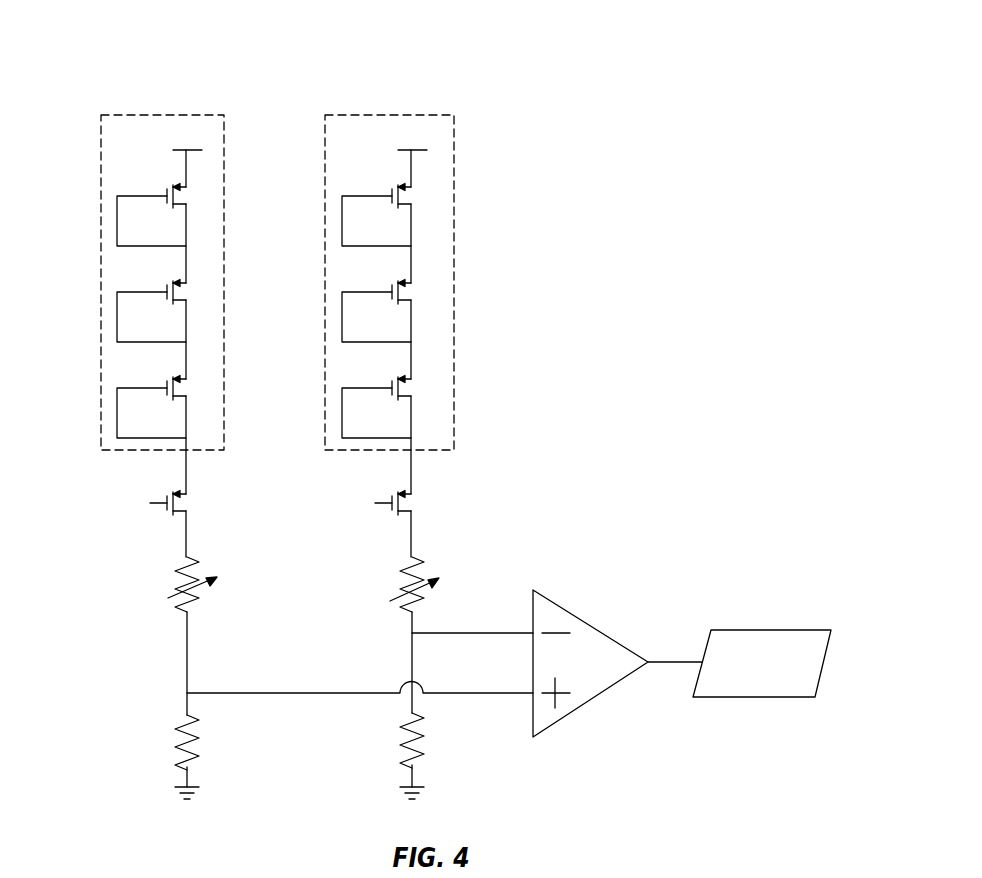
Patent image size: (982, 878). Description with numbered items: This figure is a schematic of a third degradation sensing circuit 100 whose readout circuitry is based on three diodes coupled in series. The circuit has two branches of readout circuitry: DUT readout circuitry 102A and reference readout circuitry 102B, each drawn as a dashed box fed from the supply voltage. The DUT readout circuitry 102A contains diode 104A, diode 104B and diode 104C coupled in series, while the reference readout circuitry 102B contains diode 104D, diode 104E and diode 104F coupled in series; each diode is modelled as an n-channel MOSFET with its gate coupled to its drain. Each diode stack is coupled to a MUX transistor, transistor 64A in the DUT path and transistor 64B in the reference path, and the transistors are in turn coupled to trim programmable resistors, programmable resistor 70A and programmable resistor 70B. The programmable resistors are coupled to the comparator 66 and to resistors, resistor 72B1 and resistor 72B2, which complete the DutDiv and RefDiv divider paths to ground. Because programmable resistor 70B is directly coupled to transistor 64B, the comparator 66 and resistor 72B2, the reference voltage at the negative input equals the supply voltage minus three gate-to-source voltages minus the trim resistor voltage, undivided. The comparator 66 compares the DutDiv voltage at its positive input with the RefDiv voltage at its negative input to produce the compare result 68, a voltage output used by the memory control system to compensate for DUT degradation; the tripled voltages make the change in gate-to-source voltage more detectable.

The third degradation sensing circuit 100 is at (474, 45).
The DUT readout circuitry 102A is at (168, 115).
The reference readout circuitry 102B is at (393, 115).
The diode 104A is at (163, 193).
The diode 104B is at (163, 289).
The diode 104C is at (163, 385).
The diode 104D is at (388, 193).
The diode 104E is at (388, 289).
The diode 104F is at (388, 385).
The transistor 64A is at (165, 502).
The transistor 64B is at (390, 502).
The programmable resistor 70A is at (179, 604).
The programmable resistor 70B is at (404, 604).
The resistor 72B1 is at (200, 737).
The resistor 72B2 is at (422, 737).
The comparator 66 is at (590, 627).
The compare result 68 is at (764, 630).